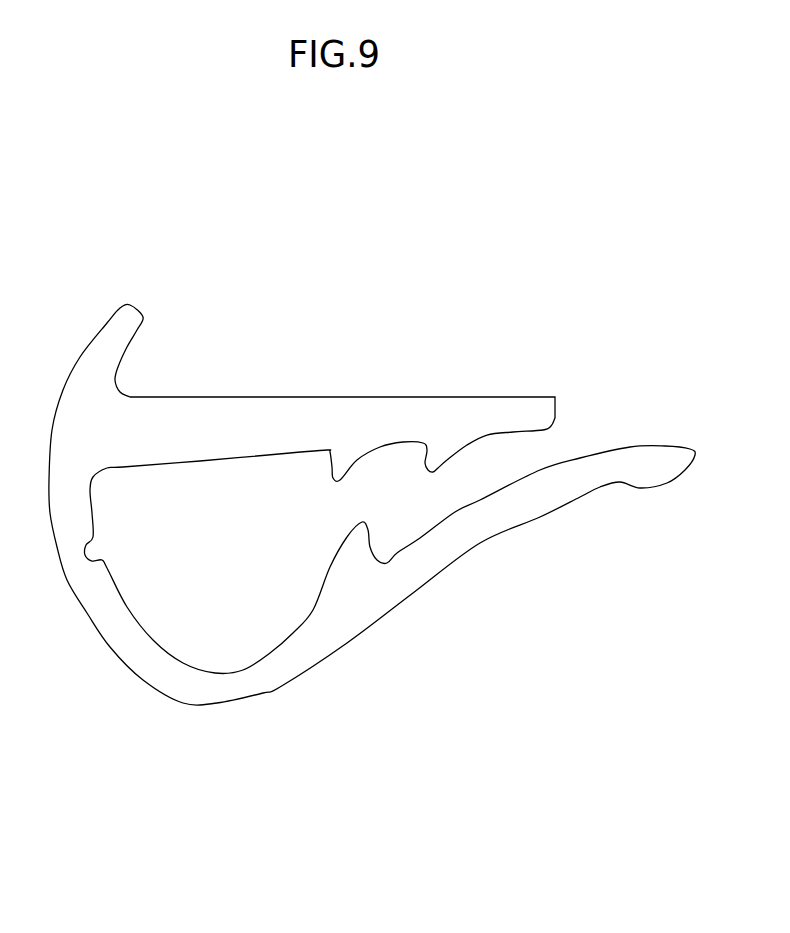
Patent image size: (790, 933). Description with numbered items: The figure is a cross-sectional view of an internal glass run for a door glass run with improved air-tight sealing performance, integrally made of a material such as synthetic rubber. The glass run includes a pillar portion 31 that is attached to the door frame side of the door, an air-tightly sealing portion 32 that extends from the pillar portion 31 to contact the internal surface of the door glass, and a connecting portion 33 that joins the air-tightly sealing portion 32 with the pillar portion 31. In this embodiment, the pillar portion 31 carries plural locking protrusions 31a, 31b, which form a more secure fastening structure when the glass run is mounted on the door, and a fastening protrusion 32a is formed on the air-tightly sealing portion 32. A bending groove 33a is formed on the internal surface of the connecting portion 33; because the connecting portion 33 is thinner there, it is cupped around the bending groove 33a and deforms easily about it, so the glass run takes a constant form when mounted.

The pillar portion 31 is at (302, 541).
The locking protrusion 31a is at (337, 475).
The locking protrusion 31b is at (437, 463).
The air-tightly sealing portion 32 is at (487, 591).
The fastening protrusion 32a is at (365, 528).
The connecting portion 33 is at (197, 625).
The bending groove 33a is at (100, 548).